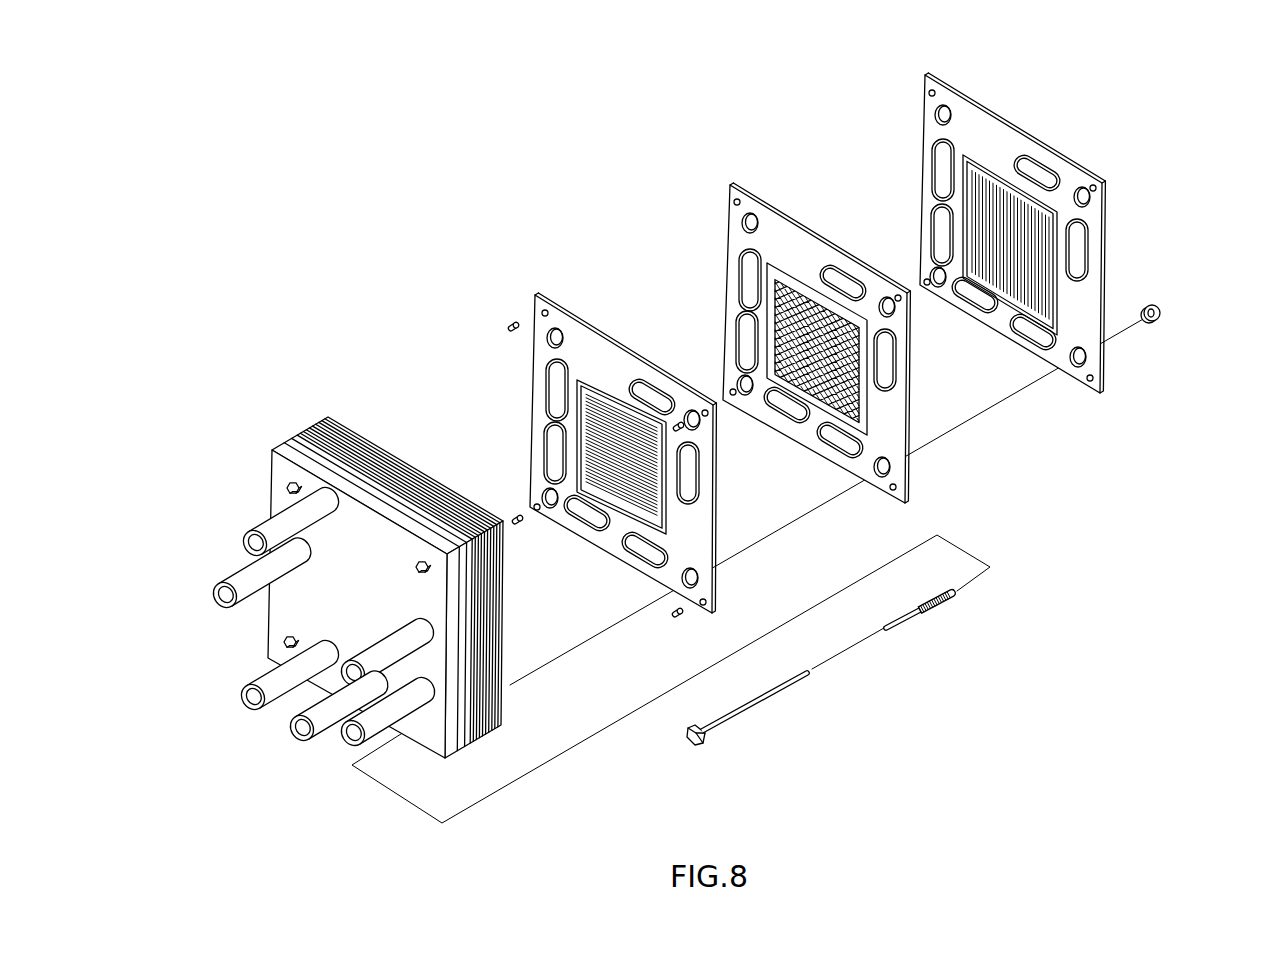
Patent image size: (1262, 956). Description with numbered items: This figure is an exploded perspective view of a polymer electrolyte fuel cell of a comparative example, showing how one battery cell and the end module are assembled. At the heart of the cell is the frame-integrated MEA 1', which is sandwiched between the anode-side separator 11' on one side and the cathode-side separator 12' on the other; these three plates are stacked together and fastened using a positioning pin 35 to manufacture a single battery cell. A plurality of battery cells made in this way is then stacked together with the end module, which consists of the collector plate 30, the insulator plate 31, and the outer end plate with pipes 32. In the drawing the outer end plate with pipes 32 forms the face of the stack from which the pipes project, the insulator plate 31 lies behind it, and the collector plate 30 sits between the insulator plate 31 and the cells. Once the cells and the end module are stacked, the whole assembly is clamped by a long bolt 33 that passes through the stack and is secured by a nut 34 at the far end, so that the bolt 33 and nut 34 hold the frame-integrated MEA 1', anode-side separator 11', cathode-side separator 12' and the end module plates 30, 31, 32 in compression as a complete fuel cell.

The frame-integrated MEA 1' is at (778, 303).
The anode-side separator 11' is at (969, 220).
The cathode-side separator 12' is at (579, 415).
The collector plate 30 is at (462, 742).
The insulator plate 31 is at (298, 438).
The outer end plate with pipes 32 is at (283, 450).
The bolt 33 is at (702, 743).
The nut 34 is at (1157, 320).
The positioning pin 35 is at (513, 326).